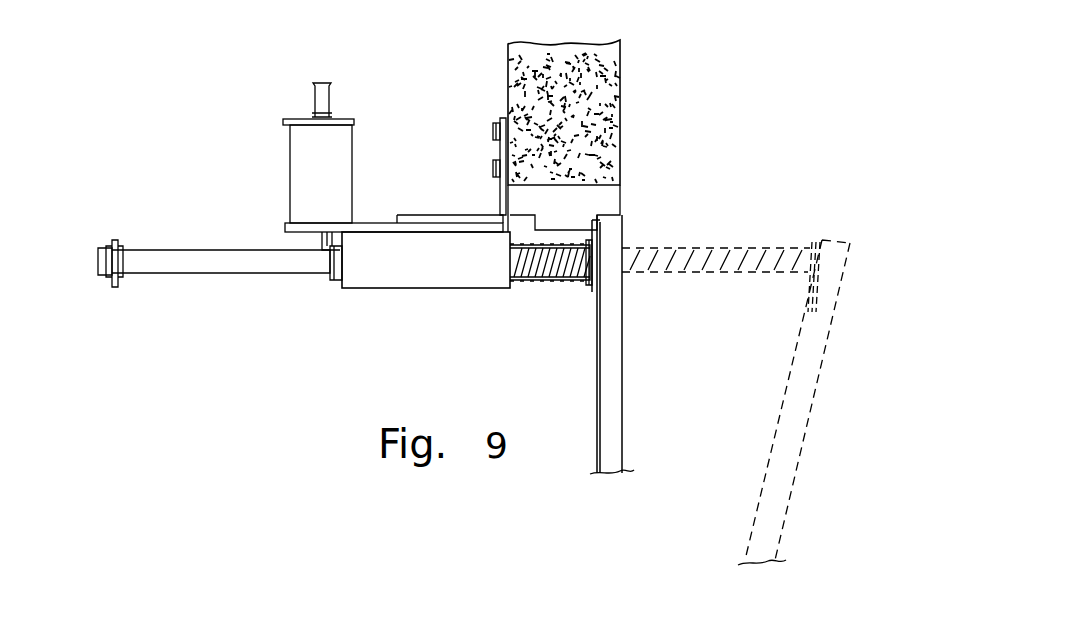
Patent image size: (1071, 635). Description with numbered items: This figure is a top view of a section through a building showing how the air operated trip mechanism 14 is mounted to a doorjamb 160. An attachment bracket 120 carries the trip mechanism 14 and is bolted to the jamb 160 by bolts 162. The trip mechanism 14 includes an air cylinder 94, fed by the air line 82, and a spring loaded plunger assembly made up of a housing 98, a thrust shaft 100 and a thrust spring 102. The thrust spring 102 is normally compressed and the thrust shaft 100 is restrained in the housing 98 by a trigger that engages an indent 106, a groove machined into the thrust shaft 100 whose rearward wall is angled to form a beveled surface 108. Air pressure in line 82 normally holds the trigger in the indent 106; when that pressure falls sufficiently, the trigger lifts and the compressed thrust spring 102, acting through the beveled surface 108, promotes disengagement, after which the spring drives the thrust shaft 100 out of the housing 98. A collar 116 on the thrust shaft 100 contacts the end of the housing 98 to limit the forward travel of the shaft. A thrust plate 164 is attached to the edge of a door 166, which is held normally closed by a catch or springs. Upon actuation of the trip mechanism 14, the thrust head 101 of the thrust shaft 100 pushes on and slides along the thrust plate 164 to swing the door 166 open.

The trip mechanism 14 is at (365, 300).
The line 82 is at (313, 100).
The air cylinder 94 is at (292, 178).
The housing 98 is at (418, 288).
The thrust shaft 100 is at (170, 272).
The thrust head 101 is at (590, 283).
The thrust spring 102 is at (531, 282).
The indent 106 is at (336, 284).
The beveled surface 108 is at (338, 283).
The collar 116 is at (115, 288).
The attachment bracket 120 is at (437, 214).
The doorjamb 160 is at (623, 132).
The bolts 162 is at (493, 170).
The thrust plate 164 is at (590, 290).
The door 166 is at (783, 424).